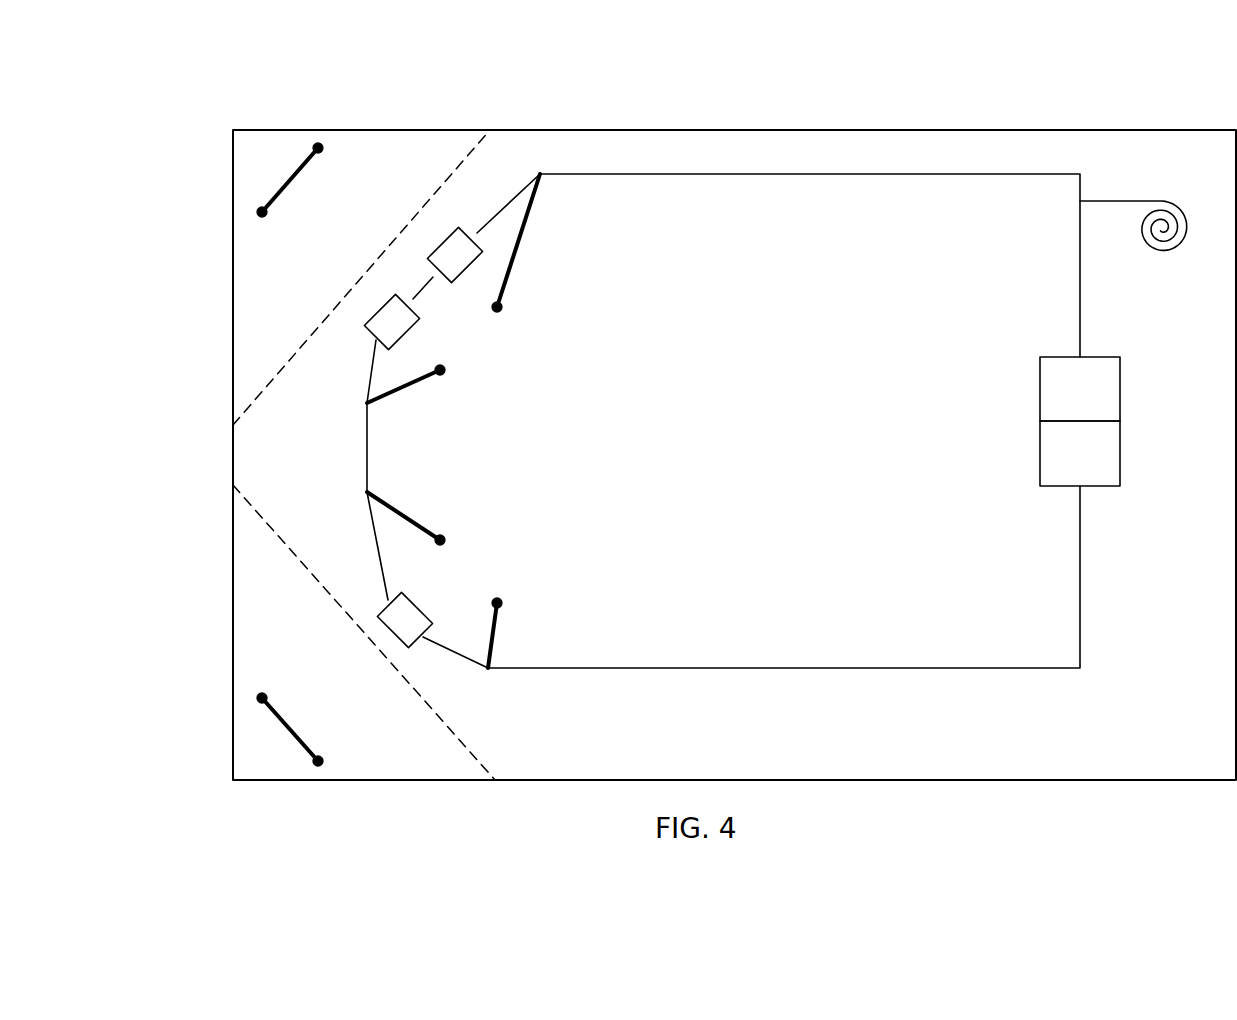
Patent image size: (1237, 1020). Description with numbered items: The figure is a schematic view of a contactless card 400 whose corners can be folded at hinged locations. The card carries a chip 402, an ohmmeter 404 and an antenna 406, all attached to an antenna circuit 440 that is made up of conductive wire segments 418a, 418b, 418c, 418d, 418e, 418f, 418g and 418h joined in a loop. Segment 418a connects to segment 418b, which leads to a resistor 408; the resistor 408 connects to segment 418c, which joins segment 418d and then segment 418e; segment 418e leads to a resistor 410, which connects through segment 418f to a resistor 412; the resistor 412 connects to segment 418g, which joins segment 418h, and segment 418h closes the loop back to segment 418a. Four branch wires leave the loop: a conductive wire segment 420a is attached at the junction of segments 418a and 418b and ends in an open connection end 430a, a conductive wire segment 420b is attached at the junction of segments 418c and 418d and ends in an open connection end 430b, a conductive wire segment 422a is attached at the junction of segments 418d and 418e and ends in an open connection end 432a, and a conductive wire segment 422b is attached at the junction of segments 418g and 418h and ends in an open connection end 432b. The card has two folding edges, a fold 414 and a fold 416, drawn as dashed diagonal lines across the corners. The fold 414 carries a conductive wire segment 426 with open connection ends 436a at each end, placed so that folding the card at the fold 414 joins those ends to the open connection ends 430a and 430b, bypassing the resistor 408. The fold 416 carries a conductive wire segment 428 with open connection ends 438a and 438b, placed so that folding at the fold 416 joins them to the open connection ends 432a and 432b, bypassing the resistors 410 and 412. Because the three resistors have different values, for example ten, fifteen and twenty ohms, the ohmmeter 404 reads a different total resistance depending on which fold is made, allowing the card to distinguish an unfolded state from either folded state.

The contactless card 400 is at (1038, 88).
The chip 402 is at (1040, 391).
The ohmmeter 404 is at (1040, 455).
The antenna 406 is at (1163, 251).
The resistor 408 is at (415, 600).
The resistor 410 is at (400, 337).
The resistor 412 is at (465, 272).
The fold 414 is at (287, 548).
The fold 416 is at (257, 395).
The conductive wire segment 418a is at (1080, 578).
The conductive wire segment 418b is at (455, 653).
The conductive wire segment 418c is at (375, 540).
The conductive wire segment 418d is at (367, 443).
The conductive wire segment 418e is at (369, 373).
The conductive wire segment 418f is at (425, 290).
The conductive wire segment 418g is at (493, 220).
The conductive wire segment 418h is at (1080, 265).
The conductive wire segment 420a is at (495, 638).
The conductive wire segment 420b is at (395, 507).
The conductive wire segment 422a is at (402, 388).
The conductive wire segment 422b is at (522, 235).
The conductive wire segment 426 is at (292, 728).
The conductive wire segment 428 is at (287, 178).
The open connection end 430a is at (498, 606).
The open connection end 430b is at (446, 540).
The open connection end 432a is at (446, 371).
The open connection end 432b is at (503, 307).
The open connection end 436a is at (262, 698).
The open connection end 438a is at (262, 212).
The open connection end 438b is at (318, 143).
The antenna circuit 440 is at (1092, 673).